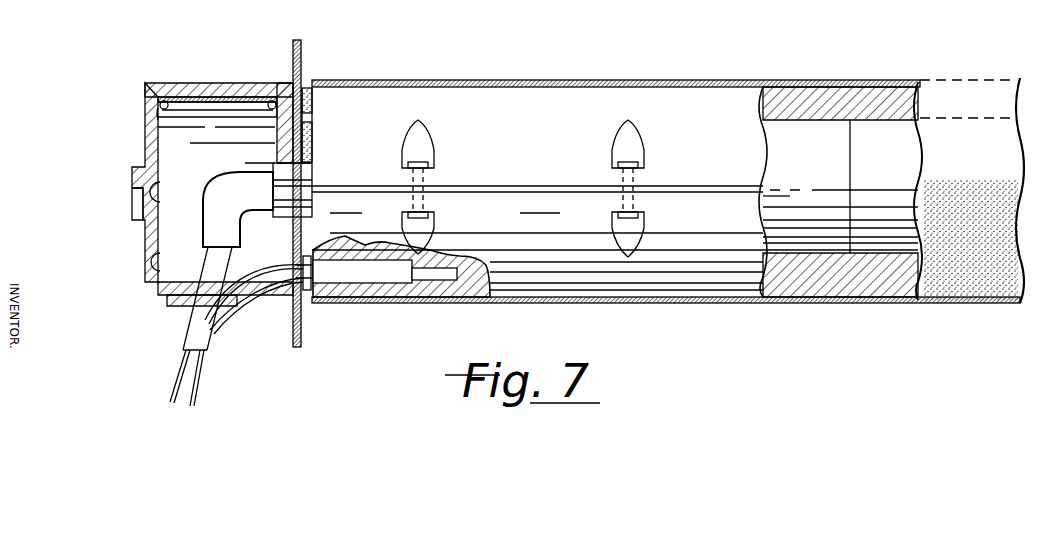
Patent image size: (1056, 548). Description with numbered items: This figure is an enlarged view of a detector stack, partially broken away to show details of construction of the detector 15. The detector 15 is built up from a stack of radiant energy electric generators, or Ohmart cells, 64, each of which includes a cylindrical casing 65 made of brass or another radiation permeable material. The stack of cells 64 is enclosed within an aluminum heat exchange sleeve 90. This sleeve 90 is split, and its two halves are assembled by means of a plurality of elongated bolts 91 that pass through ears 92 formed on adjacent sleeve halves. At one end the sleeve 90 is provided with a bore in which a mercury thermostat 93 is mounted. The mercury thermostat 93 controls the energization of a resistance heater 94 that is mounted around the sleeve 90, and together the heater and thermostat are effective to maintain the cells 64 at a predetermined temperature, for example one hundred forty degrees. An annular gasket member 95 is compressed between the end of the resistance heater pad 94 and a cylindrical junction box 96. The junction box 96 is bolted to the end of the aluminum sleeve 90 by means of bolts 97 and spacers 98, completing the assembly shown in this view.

The detector 15 is at (812, 145).
The radiant energy electric generator 64 is at (792, 166).
The cylindrical casing 65 is at (780, 195).
The heat exchange sleeve 90 is at (597, 112).
The elongated bolt 91 is at (420, 160).
The ear 92 is at (408, 186).
The mercury thermostat 93 is at (358, 287).
The resistance heater 94 is at (548, 80).
The annular gasket member 95 is at (302, 56).
The junction box 96 is at (148, 126).
The bolt 97 is at (268, 99).
The spacer 98 is at (307, 112).